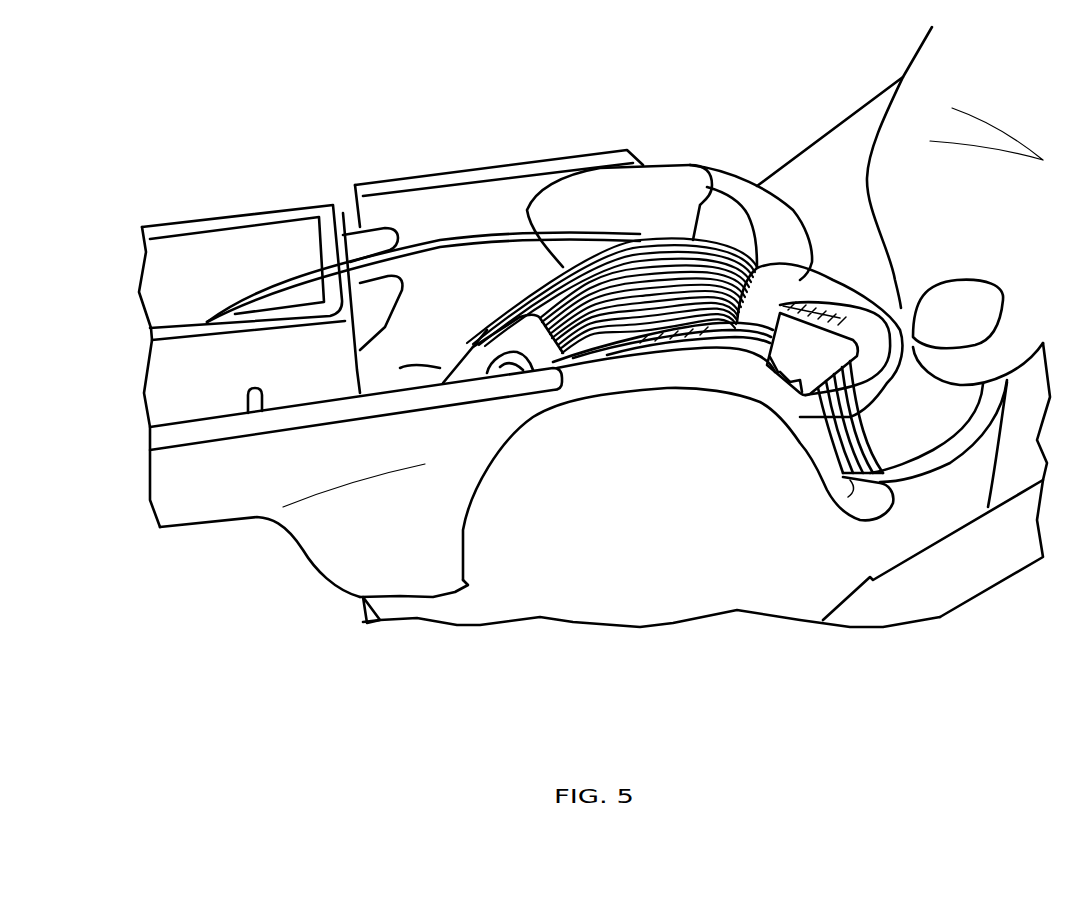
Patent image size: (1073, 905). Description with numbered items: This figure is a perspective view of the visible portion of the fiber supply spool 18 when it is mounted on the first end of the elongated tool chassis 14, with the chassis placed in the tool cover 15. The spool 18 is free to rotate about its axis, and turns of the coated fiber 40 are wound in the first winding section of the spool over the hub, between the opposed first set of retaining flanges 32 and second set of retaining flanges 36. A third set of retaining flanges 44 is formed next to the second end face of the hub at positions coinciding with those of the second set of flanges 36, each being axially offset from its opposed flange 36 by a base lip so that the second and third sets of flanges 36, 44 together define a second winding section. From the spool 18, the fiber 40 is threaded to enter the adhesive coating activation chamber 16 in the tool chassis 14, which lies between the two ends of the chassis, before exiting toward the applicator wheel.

The tool chassis 14 is at (452, 175).
The tool cover 15 is at (636, 558).
The adhesive coating activation chamber 16 is at (258, 240).
The fiber supply spool 18 is at (590, 168).
The first set of retaining flanges 32 is at (660, 183).
The second set of retaining flanges 36 is at (785, 285).
The fiber 40 is at (353, 247).
The third set of retaining flanges 44 is at (770, 357).